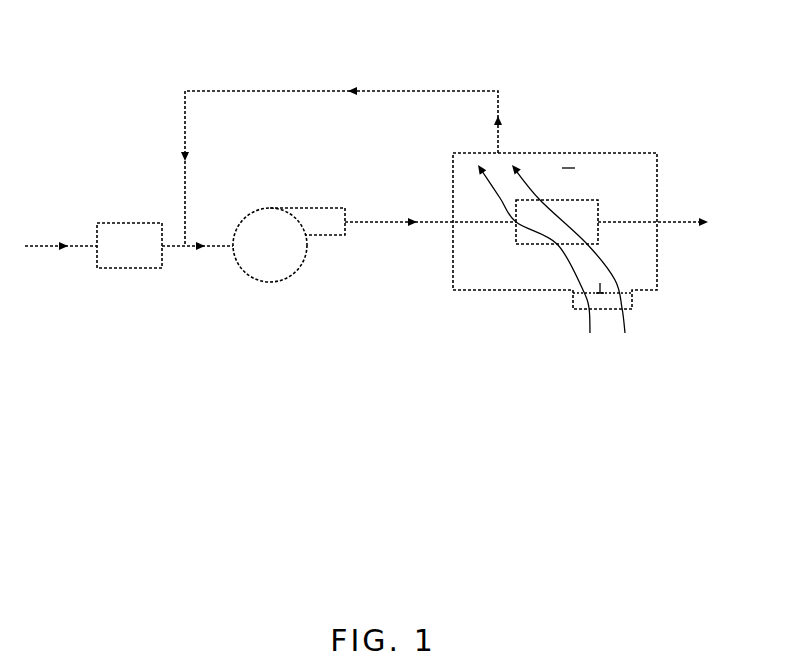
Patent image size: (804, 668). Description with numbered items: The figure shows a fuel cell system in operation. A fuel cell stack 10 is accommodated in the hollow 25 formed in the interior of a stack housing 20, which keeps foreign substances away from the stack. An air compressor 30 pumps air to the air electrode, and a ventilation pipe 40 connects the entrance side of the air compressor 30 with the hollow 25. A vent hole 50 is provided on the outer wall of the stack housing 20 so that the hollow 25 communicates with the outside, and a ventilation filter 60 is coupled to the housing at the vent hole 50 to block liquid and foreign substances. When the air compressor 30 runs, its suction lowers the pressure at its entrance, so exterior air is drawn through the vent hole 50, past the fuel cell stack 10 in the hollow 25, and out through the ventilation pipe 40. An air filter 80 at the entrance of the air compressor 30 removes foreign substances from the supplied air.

The fuel cell stack 10 is at (600, 209).
The stack housing 20 is at (537, 152).
The hollow 25 is at (568, 168).
The air compressor 30 is at (270, 275).
The ventilation pipe 40 is at (401, 88).
The vent hole 50 is at (573, 297).
The ventilation filter 60 is at (580, 311).
The air filter 80 is at (131, 263).